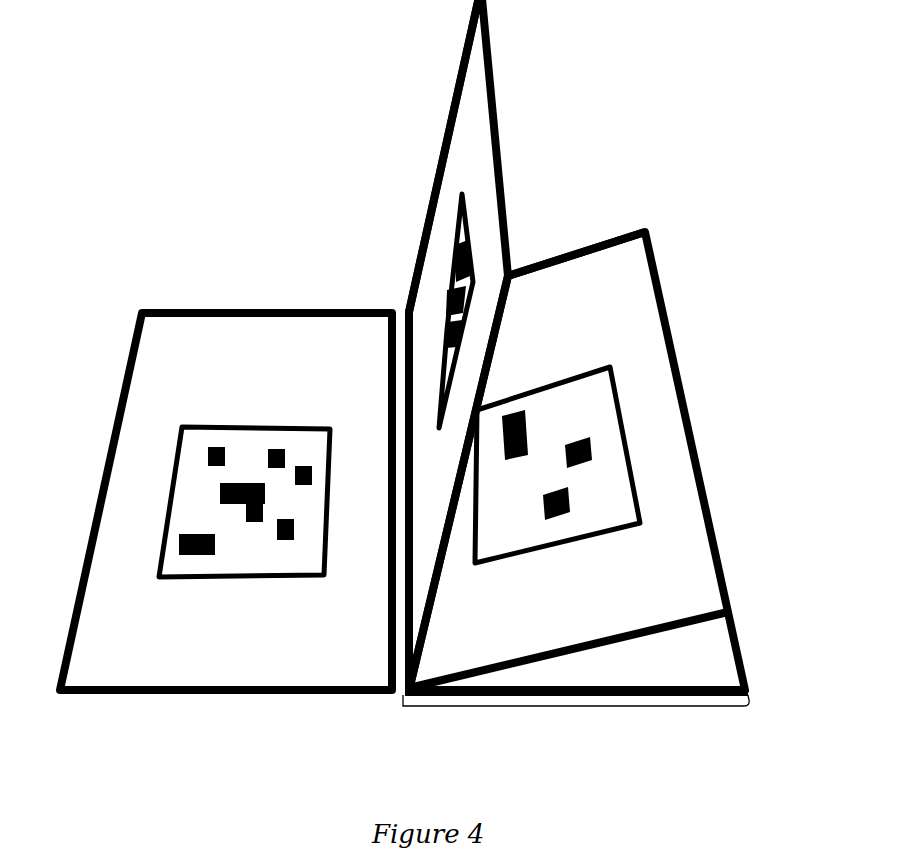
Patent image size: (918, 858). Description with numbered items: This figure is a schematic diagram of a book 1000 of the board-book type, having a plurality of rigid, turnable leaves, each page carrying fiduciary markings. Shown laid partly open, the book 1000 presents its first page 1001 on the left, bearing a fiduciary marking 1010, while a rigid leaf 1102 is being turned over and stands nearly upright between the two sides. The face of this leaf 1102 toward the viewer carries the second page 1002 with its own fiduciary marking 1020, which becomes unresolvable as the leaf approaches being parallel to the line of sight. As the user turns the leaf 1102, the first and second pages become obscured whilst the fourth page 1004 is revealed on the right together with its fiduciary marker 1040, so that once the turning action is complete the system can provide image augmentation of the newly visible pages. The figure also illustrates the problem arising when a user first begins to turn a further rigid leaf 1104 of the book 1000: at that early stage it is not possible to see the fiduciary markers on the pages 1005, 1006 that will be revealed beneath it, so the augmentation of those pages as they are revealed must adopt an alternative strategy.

The book 1000 is at (437, 373).
The page 1 1001 is at (214, 501).
The page 2 1002 is at (445, 345).
The page 4 1004 is at (621, 426).
The page 1005 is at (712, 632).
The page 1006 is at (712, 670).
The fiduciary marking 1010 is at (170, 466).
The fiduciary marking 1020 is at (434, 262).
The fiduciary marker 1040 is at (635, 429).
The rigid leaf 1102 is at (440, 102).
The rigid leaf 1104 is at (580, 232).